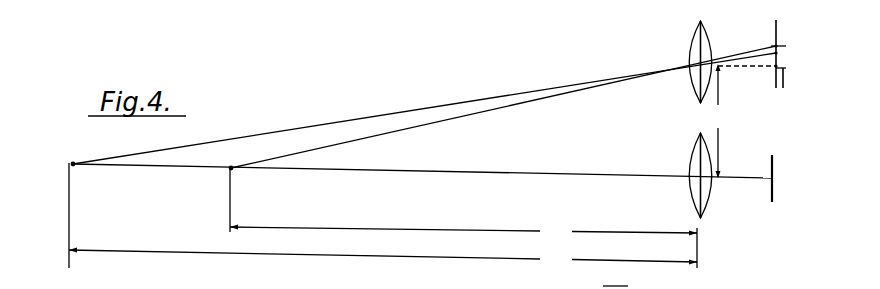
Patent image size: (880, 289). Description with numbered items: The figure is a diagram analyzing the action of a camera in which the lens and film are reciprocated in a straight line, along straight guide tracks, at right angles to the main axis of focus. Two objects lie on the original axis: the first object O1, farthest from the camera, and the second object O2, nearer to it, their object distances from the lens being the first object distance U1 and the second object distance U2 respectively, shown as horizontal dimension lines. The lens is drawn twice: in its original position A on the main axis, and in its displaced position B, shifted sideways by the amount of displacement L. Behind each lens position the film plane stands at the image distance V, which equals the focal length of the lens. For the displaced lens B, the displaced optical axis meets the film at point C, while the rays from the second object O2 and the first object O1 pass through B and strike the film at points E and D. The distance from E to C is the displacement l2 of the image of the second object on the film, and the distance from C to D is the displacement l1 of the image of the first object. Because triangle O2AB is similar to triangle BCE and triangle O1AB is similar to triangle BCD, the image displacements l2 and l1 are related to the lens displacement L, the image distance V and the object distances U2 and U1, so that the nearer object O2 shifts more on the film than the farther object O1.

The object No. 1 O1 is at (81, 215).
The object No. 2 O2 is at (240, 199).
The lens in original position A is at (700, 175).
The lens in displaced position B is at (700, 62).
The amount of displacement L is at (717, 121).
The image distance V is at (753, 132).
The image point of object No. 2 E is at (773, 45).
The image point of object No. 1 D is at (770, 55).
The axis point on film C is at (770, 65).
The displacement on film of image of object No. 2 l2 is at (760, 47).
The displacement on film of image of object No. 1 l1 is at (767, 85).
The object distance of object No. 1 U1 is at (383, 259).
The object distance of object No. 2 U2 is at (463, 233).